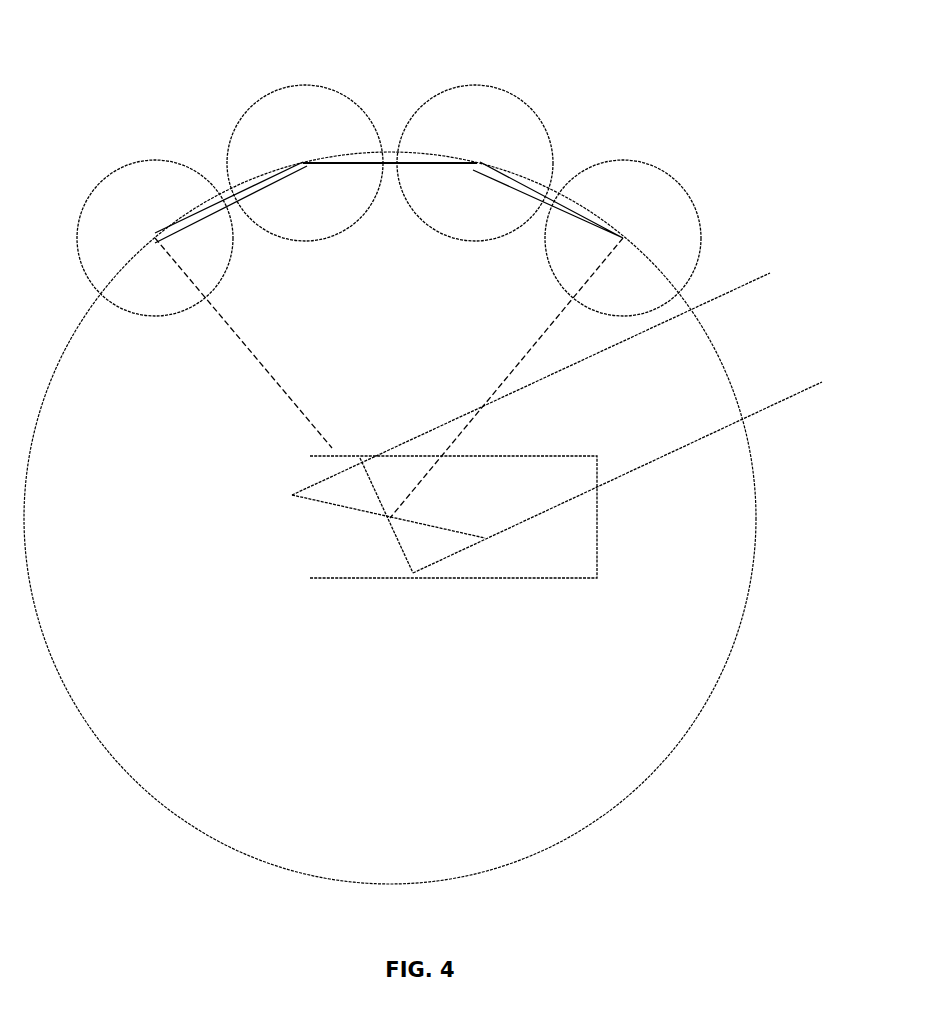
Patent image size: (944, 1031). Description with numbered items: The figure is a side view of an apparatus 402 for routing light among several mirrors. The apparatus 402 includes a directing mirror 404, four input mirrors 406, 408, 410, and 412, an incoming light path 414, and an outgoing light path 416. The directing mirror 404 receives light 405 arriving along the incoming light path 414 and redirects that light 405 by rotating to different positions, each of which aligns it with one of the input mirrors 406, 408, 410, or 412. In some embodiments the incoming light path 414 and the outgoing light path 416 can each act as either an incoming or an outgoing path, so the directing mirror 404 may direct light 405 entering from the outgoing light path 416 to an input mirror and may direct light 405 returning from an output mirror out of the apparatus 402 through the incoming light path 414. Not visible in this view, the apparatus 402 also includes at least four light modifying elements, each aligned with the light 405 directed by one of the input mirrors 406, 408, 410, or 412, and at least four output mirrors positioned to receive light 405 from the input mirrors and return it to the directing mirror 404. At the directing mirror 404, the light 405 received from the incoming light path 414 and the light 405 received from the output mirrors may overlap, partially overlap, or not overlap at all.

The apparatus 402 is at (728, 99).
The directing mirror 404 is at (321, 518).
The light 405 is at (265, 348).
The input mirror 406 is at (109, 163).
The input mirror 408 is at (252, 85).
The input mirror 410 is at (483, 77).
The input mirror 412 is at (622, 154).
The incoming light path 414 is at (770, 371).
The outgoing light path 416 is at (575, 545).